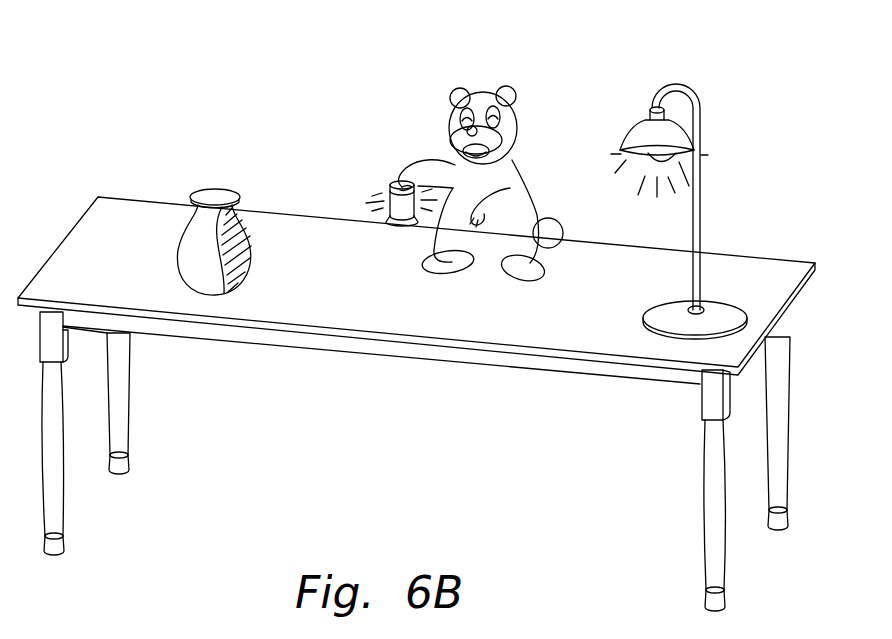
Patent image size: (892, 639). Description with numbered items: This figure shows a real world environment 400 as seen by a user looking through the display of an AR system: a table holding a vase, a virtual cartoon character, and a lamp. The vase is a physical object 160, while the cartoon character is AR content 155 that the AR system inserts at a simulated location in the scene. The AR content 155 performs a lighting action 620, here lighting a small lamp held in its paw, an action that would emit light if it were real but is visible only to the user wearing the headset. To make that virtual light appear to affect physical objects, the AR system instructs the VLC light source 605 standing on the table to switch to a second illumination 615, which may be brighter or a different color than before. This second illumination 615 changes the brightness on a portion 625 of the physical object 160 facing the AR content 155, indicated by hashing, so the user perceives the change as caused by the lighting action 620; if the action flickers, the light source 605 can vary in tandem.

The real world environment 400 is at (125, 56).
The physical object 160 is at (247, 214).
The portion of the physical object 625 is at (253, 253).
The AR content 155 is at (488, 100).
The lighting action 620 is at (395, 228).
The VLC light source 605 is at (652, 183).
The second illumination 615 is at (632, 177).